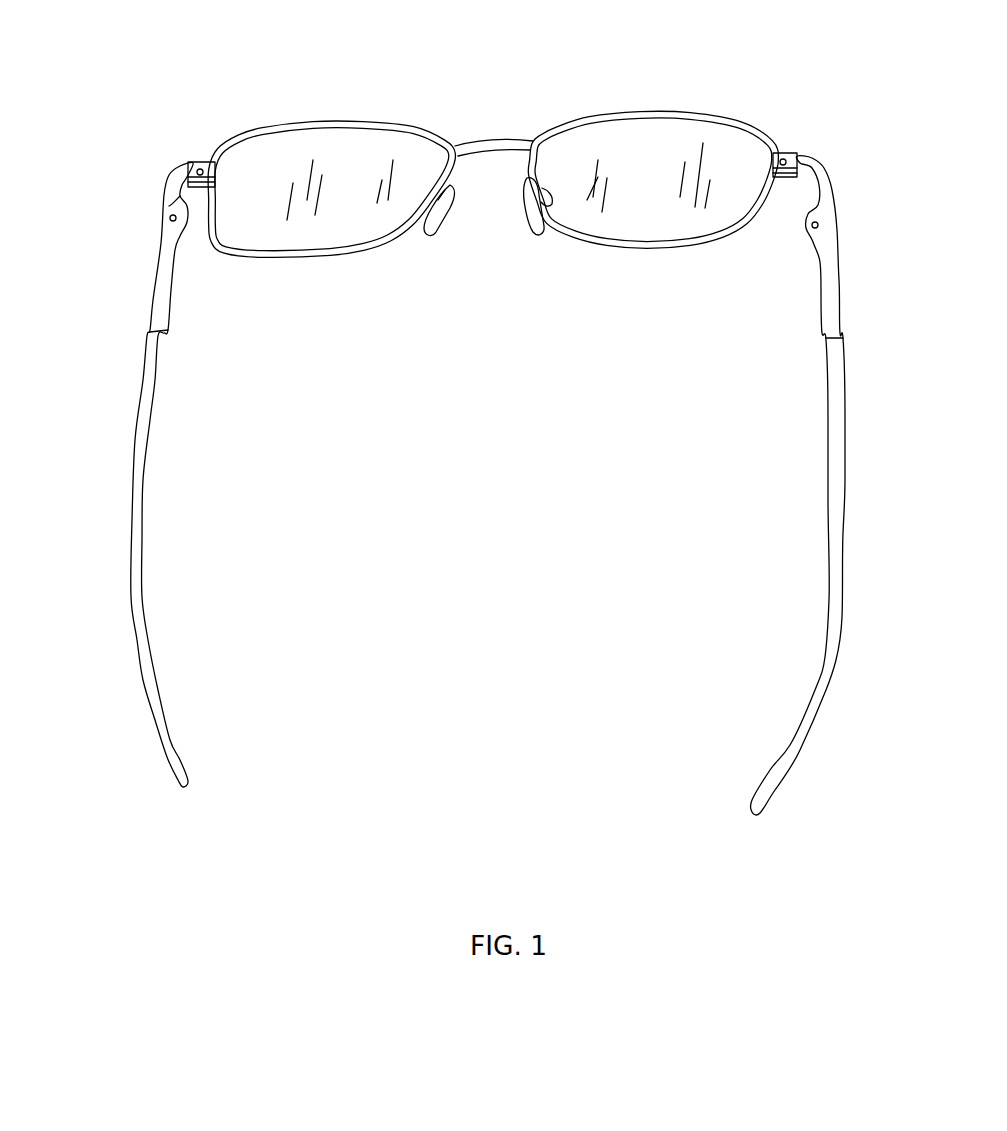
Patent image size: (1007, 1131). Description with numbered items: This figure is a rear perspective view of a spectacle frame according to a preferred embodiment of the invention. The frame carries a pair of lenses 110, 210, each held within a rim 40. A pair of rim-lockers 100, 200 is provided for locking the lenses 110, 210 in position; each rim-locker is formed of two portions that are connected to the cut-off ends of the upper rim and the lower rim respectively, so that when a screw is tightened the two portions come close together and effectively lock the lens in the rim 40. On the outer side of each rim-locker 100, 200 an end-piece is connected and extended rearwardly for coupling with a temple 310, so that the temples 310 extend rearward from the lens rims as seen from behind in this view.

The rim 40 is at (315, 124).
The rim-locker 100 is at (195, 160).
The lens 110 is at (343, 210).
The rim-locker 200 is at (785, 150).
The lens 210 is at (645, 203).
The temple 310 is at (143, 390).